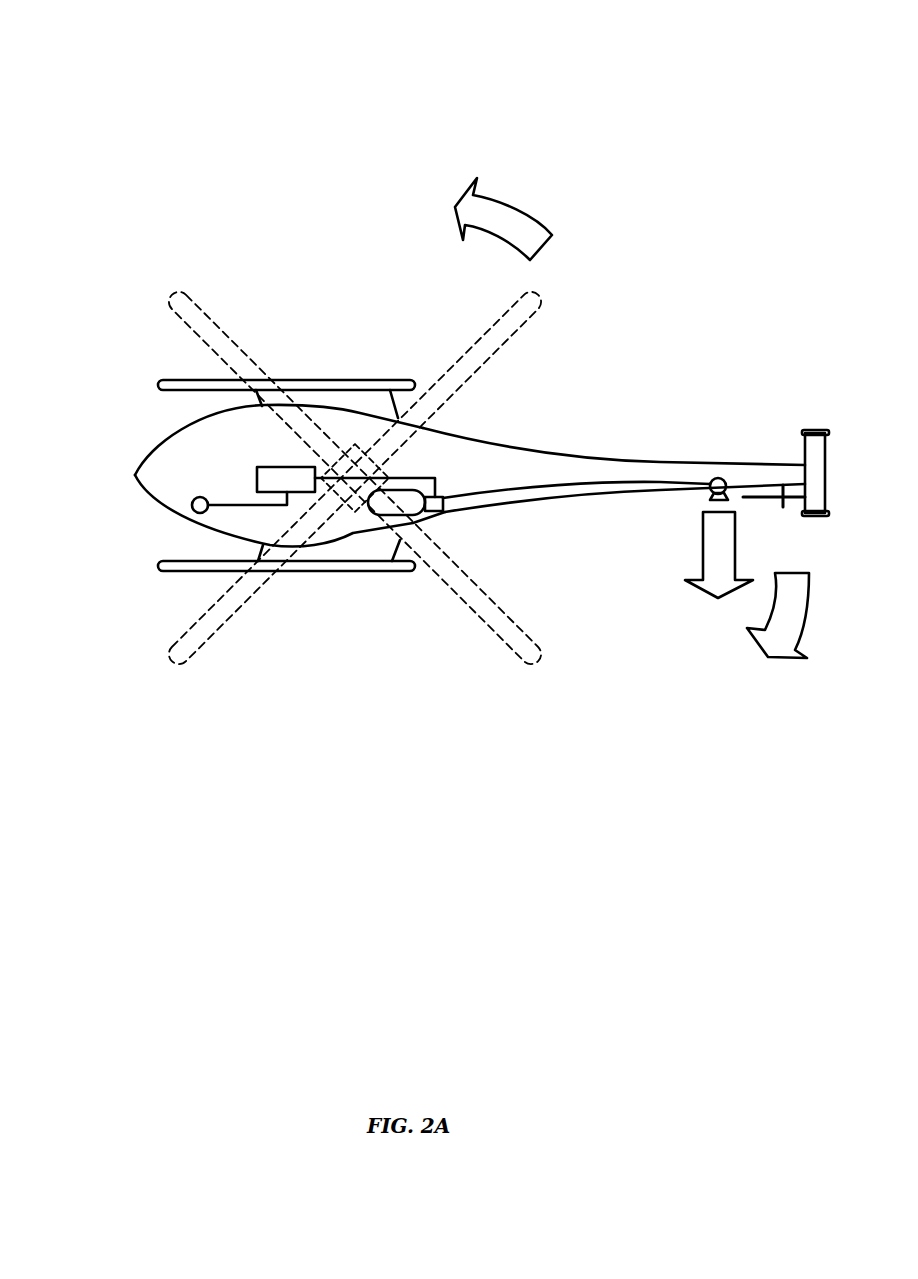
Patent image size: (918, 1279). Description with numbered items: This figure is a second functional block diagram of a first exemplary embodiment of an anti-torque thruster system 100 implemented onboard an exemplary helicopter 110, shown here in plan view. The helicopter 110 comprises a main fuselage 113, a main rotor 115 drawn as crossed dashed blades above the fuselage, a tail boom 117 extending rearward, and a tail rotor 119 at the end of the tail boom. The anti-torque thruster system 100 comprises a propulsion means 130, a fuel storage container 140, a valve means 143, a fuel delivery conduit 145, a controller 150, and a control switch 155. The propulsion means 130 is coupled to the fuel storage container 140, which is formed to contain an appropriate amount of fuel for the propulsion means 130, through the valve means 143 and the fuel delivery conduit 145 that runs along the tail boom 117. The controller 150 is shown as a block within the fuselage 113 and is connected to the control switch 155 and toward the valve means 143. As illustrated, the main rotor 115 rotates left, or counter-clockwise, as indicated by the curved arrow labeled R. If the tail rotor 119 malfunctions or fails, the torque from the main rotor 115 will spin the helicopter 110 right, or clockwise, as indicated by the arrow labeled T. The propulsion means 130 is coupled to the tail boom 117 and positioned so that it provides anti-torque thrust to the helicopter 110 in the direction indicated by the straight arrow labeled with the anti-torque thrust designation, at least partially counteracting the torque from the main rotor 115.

The anti-torque thruster system 100 is at (300, 55).
The helicopter 110 is at (258, 216).
The main fuselage 113 is at (479, 431).
The main rotor 115 is at (489, 332).
The tail boom 117 is at (684, 455).
The tail rotor 119 is at (764, 506).
The propulsion means 130 is at (705, 501).
The fuel storage container 140 is at (375, 518).
The valve means 143 is at (445, 519).
The fuel delivery conduit 145 is at (540, 480).
The controller 150 is at (254, 478).
The control switch 155 is at (191, 506).